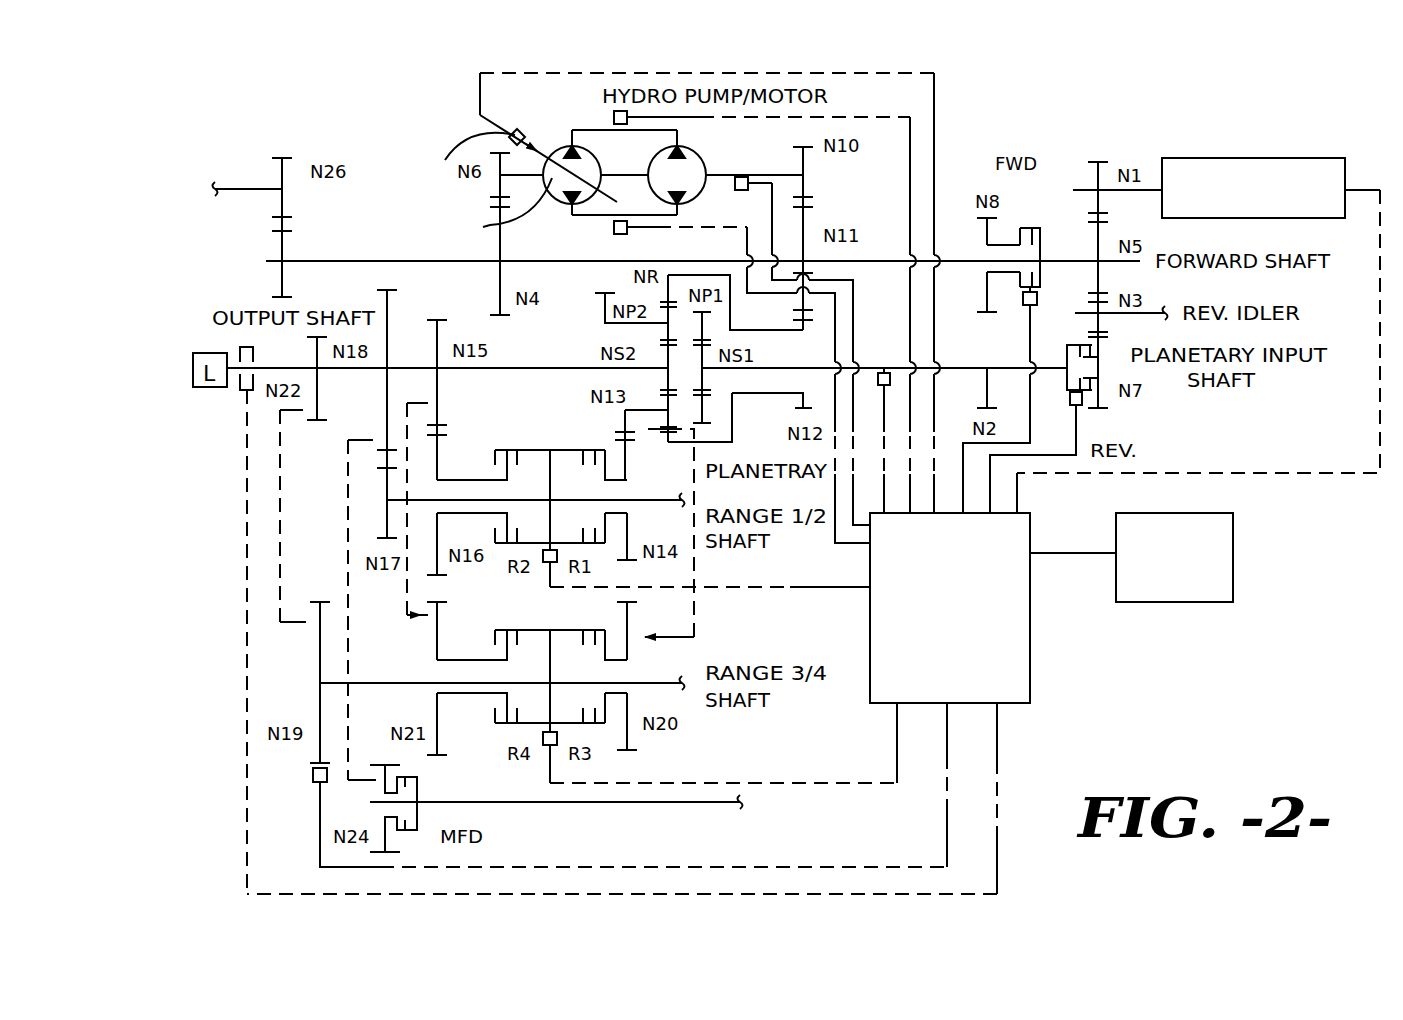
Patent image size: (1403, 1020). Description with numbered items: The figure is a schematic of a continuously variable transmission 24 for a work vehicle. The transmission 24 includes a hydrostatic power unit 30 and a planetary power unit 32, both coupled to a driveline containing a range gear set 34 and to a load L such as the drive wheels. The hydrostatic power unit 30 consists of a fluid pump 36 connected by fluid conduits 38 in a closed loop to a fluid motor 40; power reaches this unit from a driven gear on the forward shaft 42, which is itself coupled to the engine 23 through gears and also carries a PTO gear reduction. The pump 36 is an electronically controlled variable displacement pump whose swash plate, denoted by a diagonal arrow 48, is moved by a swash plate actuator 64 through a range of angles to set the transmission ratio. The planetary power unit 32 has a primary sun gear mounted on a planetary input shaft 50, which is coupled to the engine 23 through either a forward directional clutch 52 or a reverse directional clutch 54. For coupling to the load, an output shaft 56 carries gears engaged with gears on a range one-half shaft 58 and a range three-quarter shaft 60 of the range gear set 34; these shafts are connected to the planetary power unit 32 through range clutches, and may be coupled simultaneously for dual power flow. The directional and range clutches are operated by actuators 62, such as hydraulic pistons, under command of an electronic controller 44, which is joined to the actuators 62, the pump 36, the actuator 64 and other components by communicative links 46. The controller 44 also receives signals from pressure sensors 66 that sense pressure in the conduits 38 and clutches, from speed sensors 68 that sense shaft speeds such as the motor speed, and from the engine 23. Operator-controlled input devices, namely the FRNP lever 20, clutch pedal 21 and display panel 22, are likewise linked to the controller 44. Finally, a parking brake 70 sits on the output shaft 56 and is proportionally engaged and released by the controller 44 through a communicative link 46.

The FRNP lever 20 is at (1233, 560).
The clutch pedal 21 is at (1233, 560).
The display panel 22 is at (1233, 560).
The engine 23 is at (1345, 167).
The continuously variable transmission 24 is at (1132, 140).
The hydrostatic power unit 30 is at (484, 130).
The planetary power unit 32 is at (572, 381).
The range gear set 34 is at (718, 599).
The fluid pump 36 is at (560, 207).
The fluid conduits 38 is at (677, 138).
The fluid motor 40 is at (706, 165).
The forward shaft 42 is at (343, 261).
The electronic controller 44 is at (1030, 668).
The communicative link 46 is at (912, 160).
The swash plate 48 is at (501, 211).
The planetary input shaft 50 is at (768, 367).
The forward directional clutch 52 is at (1022, 230).
The reverse directional clutch 54 is at (1090, 380).
The output shaft 56 is at (372, 368).
The range 1/2 shaft 58 is at (642, 498).
The range 3/4 shaft 60 is at (363, 682).
The actuators 62 is at (545, 563).
The swash plate actuator 64 is at (476, 158).
The pressure sensors 66 is at (614, 117).
The speed sensors 68 is at (733, 183).
The parking brake 70 is at (253, 355).